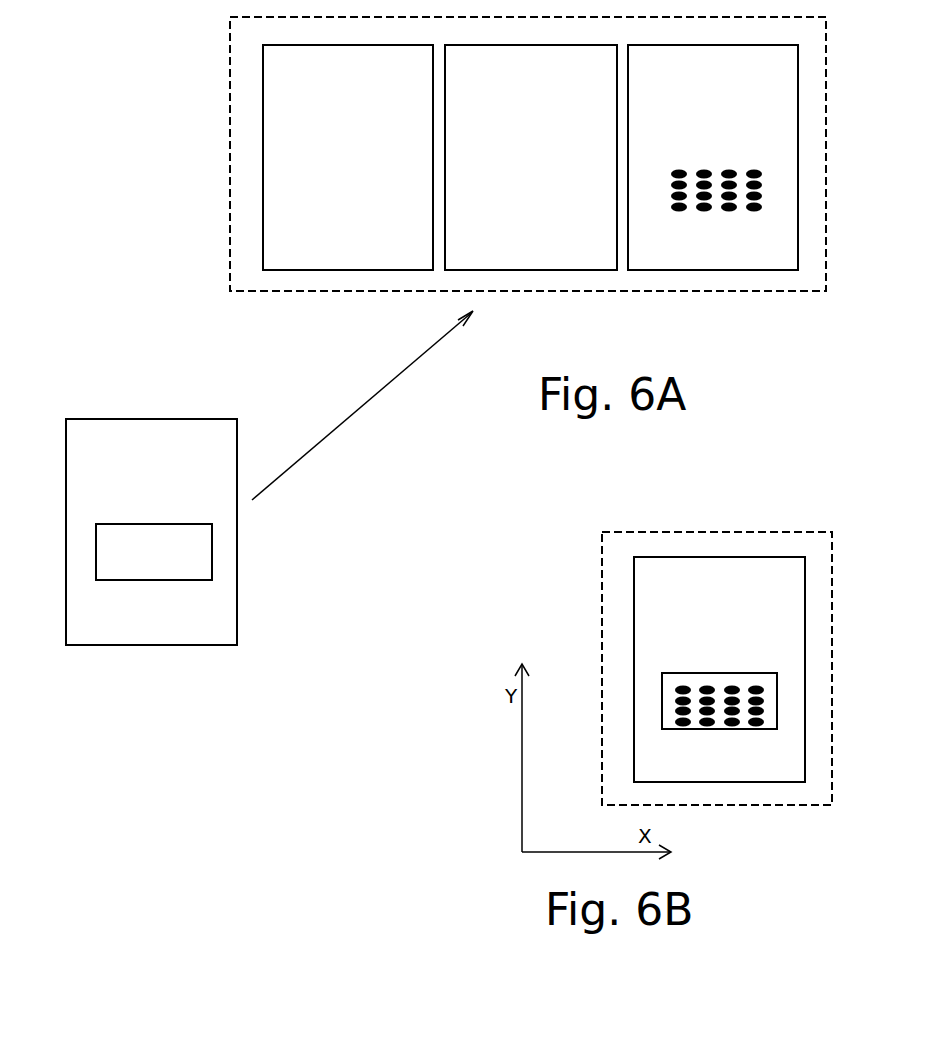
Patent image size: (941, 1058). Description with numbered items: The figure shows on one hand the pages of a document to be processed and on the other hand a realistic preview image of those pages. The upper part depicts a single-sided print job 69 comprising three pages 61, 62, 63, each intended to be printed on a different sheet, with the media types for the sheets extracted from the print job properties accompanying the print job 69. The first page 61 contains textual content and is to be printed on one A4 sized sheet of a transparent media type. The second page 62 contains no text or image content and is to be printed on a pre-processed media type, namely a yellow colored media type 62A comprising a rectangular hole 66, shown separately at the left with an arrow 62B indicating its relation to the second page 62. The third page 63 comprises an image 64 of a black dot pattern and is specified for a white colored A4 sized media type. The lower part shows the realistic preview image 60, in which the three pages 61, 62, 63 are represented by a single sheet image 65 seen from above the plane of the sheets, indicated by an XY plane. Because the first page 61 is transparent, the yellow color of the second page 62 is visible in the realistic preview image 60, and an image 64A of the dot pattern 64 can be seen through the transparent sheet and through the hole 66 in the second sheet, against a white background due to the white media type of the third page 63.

In FIG. 6B, the realistic preview image 60 is at (792, 806).
In FIG. 6A, the first page 61 is at (350, 271).
In FIG. 6A, the second page 62 is at (530, 271).
In FIG. 6A, the third page 63 is at (700, 271).
In FIG. 6A, the image of a black dot pattern 64 is at (763, 176).
In FIG. 6B, the image of the dot pattern 64A is at (766, 710).
In FIG. 6B, the sheet image 65 is at (655, 568).
In FIG. 6A, the hole 66 is at (183, 562).
In FIG. 6A, the print job 69 is at (790, 292).
In FIG. 6A, the yellow colored media type 62A is at (145, 646).
In FIG. 6A, the arrow indicating transformation 62B is at (338, 428).